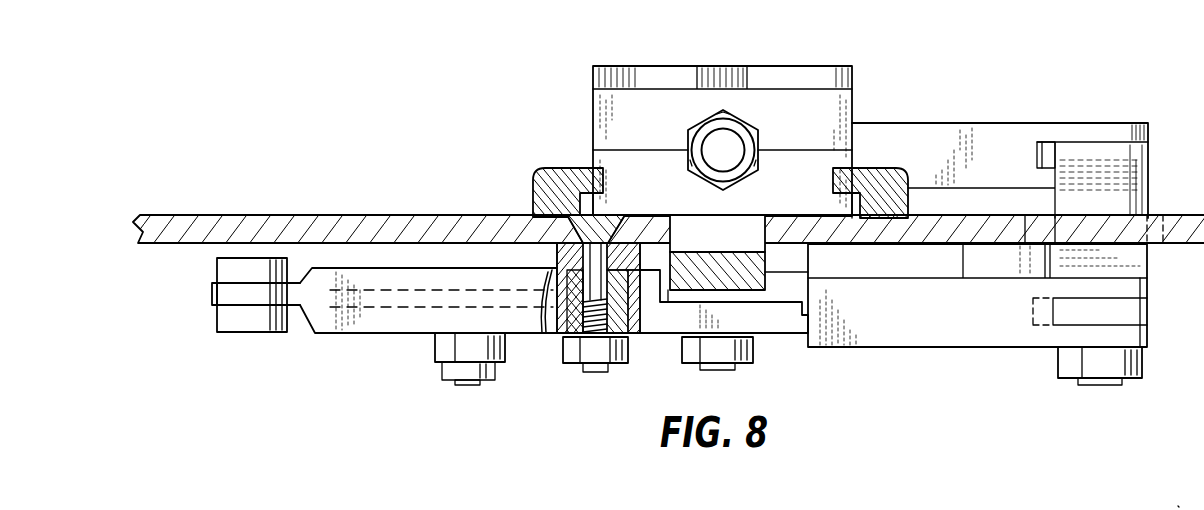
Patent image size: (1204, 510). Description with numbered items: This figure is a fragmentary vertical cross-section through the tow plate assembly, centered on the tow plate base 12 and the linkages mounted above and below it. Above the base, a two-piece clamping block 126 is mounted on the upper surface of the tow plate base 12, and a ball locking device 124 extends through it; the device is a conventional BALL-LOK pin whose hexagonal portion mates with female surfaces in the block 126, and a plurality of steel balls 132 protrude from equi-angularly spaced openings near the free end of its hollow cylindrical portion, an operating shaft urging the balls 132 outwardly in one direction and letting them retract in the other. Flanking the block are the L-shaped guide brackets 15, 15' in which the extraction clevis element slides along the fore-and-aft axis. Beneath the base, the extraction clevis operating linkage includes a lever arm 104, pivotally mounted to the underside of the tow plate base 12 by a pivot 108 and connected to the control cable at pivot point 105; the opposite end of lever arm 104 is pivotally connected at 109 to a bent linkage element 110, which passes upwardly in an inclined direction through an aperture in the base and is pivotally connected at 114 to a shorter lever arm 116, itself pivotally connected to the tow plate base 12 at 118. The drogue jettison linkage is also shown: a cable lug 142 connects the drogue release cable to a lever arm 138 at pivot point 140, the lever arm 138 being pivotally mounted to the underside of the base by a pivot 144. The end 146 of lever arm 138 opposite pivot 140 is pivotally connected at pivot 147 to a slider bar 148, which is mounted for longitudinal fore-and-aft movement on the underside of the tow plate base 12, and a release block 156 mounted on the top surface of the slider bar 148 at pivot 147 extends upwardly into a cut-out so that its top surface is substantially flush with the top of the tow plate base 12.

The tow plate base 12 is at (403, 213).
The L-shaped guide bracket 15 is at (563, 173).
The L-shaped guide bracket 15' is at (870, 173).
The lever arm 104 is at (950, 325).
The pivot point 105 is at (470, 380).
The pivot 108 is at (982, 258).
The pivotal connection 109 is at (1118, 380).
The bent linkage element 110 is at (1117, 198).
The pivotal connection 114 is at (1110, 122).
The lever arm 116 is at (978, 137).
The pivot 118 is at (1188, 496).
The ball locking device 124 is at (703, 127).
The two-piece clamping block 126 is at (600, 110).
The steel balls 132 is at (725, 113).
The lever arm 138 is at (368, 320).
The pivot point 140 is at (255, 333).
The cable lug 142 is at (230, 318).
The pivot 144 is at (598, 365).
The end of lever arm 146 is at (787, 315).
The pivot 147 is at (700, 367).
The slider bar 148 is at (808, 278).
The release block 156 is at (738, 237).